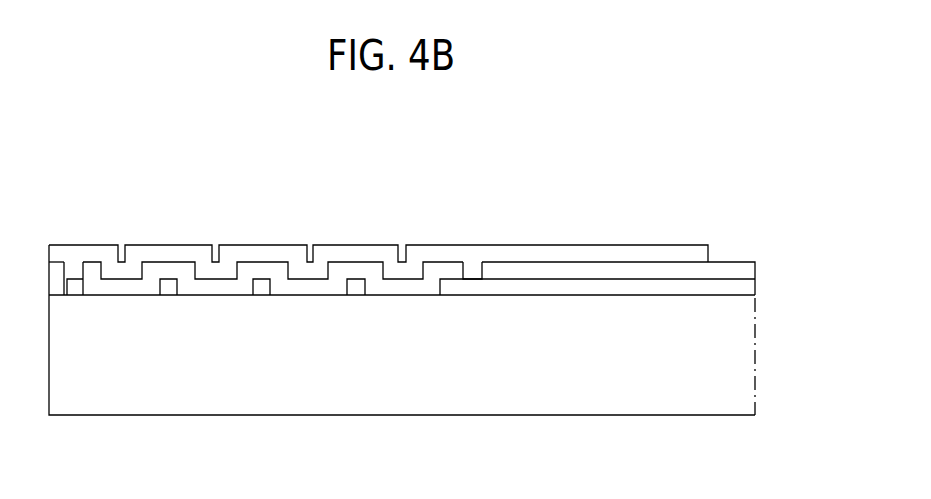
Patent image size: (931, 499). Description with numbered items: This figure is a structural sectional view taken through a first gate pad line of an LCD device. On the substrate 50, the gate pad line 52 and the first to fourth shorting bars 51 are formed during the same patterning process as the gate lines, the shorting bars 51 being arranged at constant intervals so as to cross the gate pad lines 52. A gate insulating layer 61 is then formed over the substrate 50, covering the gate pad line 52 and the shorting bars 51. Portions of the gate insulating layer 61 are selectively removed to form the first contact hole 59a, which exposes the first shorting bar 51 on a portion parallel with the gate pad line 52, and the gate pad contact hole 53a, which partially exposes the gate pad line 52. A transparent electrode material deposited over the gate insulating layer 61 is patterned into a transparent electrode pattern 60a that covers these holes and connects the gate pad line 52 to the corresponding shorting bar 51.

The substrate 50 is at (743, 349).
The shorting bars 51 is at (77, 285).
The gate pad line 52 is at (743, 288).
The gate pad contact hole 53a is at (472, 273).
The first contact hole 59a is at (73, 273).
The transparent electrode pattern 60a is at (687, 252).
The gate insulating layer 61 is at (743, 271).